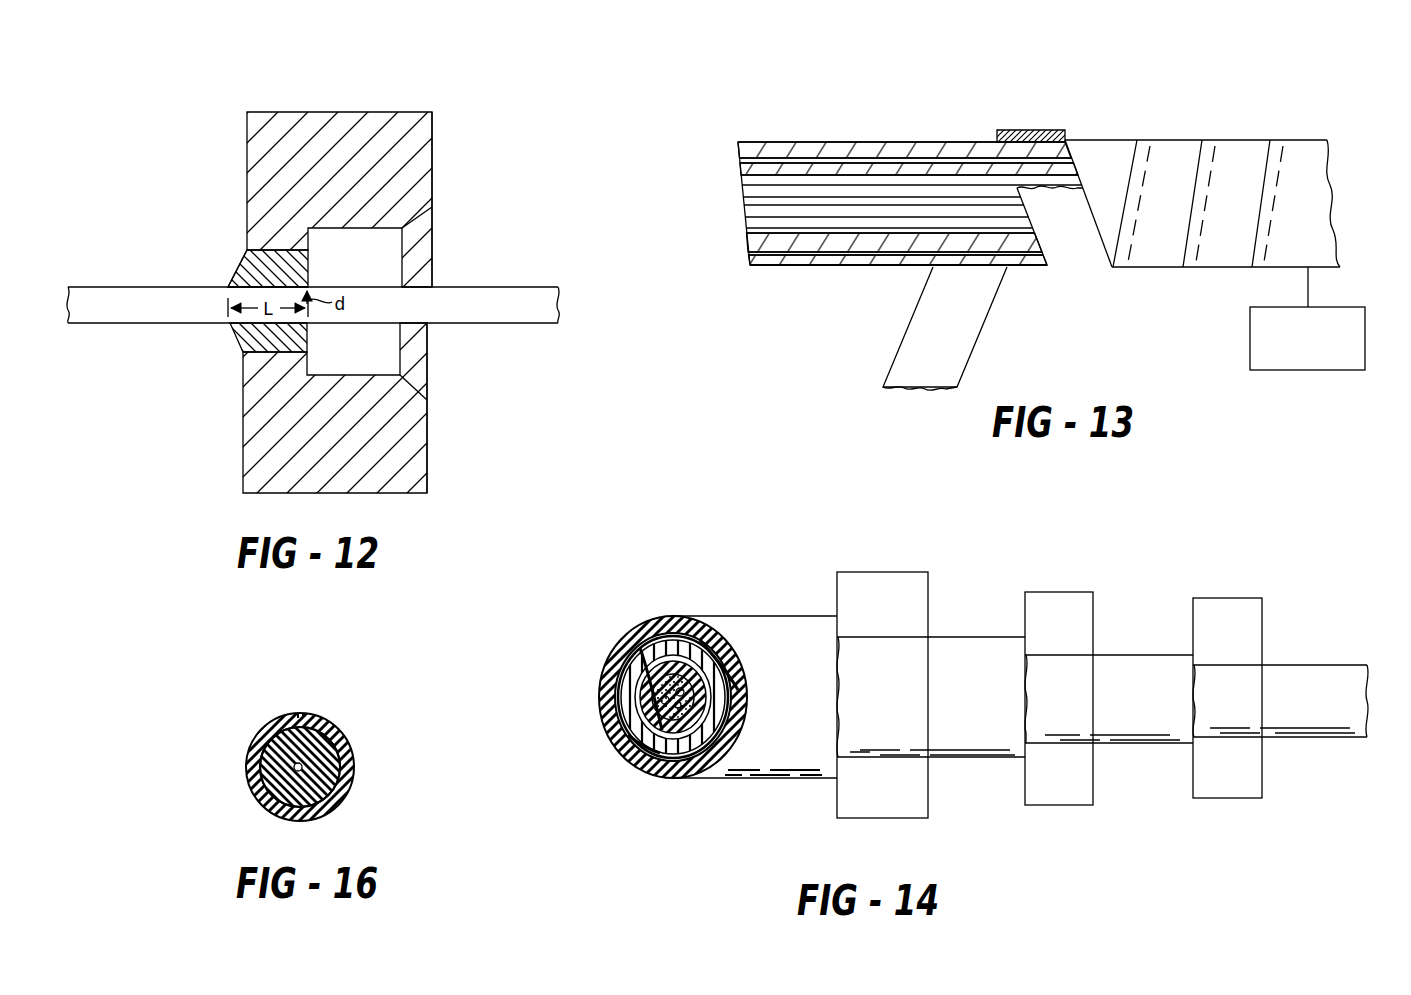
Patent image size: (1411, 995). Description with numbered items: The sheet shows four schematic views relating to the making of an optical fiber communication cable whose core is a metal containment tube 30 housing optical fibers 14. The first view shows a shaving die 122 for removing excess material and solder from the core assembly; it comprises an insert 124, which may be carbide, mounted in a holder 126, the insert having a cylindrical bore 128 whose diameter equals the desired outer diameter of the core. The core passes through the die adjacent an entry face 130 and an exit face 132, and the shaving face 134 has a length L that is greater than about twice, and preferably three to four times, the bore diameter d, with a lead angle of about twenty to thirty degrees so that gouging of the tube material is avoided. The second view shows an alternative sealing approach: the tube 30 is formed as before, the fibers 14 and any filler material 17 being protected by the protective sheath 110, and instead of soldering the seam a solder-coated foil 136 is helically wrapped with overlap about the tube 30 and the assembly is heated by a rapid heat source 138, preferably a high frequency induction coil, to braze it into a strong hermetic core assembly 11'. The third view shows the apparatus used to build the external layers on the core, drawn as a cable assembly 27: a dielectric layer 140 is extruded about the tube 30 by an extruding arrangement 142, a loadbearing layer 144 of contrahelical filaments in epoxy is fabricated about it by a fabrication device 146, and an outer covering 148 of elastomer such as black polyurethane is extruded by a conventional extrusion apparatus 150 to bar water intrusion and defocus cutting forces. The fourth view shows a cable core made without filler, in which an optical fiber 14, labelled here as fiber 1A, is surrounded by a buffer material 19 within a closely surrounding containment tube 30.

In FIG. 12, the shaving die 122 is at (186, 122).
In FIG. 12, the holder 126 is at (331, 120).
In FIG. 12, the exit face 132 is at (434, 150).
In FIG. 12, the insert 124 is at (243, 258).
In FIG. 12, the entry face 130 is at (224, 268).
In FIG. 12, the shaving face 134 is at (232, 325).
In FIG. 12, the cylindrical bore 128 is at (313, 287).
In FIG. 12, the containment tube 30 is at (87, 290).
In FIG. 13, the containment tube 30 is at (811, 142).
In FIG. 14, the containment tube 30 is at (627, 763).
In FIG. 16, the containment tube 30 is at (350, 790).
In FIG. 13, the optical fibers 1A is at (760, 227).
In FIG. 16, the optical fibers 1A is at (294, 767).
In FIG. 13, the protective sheath 110 is at (832, 243).
In FIG. 13, the core assembly 11' is at (1178, 178).
In FIG. 13, the solder-coated foil 136 is at (988, 310).
In FIG. 13, the heat source 138 is at (1250, 337).
In FIG. 14, the loadbearing layer 144 is at (675, 615).
In FIG. 14, the dielectric layer 140 is at (643, 647).
In FIG. 14, the filler material 17 is at (640, 693).
In FIG. 14, the optical fibers 14 is at (735, 700).
In FIG. 14, the outer covering 148 is at (664, 778).
In FIG. 14, the extrusion apparatus 150 is at (930, 575).
In FIG. 14, the fabrication device 146 is at (1097, 602).
In FIG. 14, the extruding arrangement 142 is at (1263, 614).
In FIG. 14, the cable assembly 27 is at (1118, 839).
In FIG. 16, the buffer material 19 is at (345, 747).